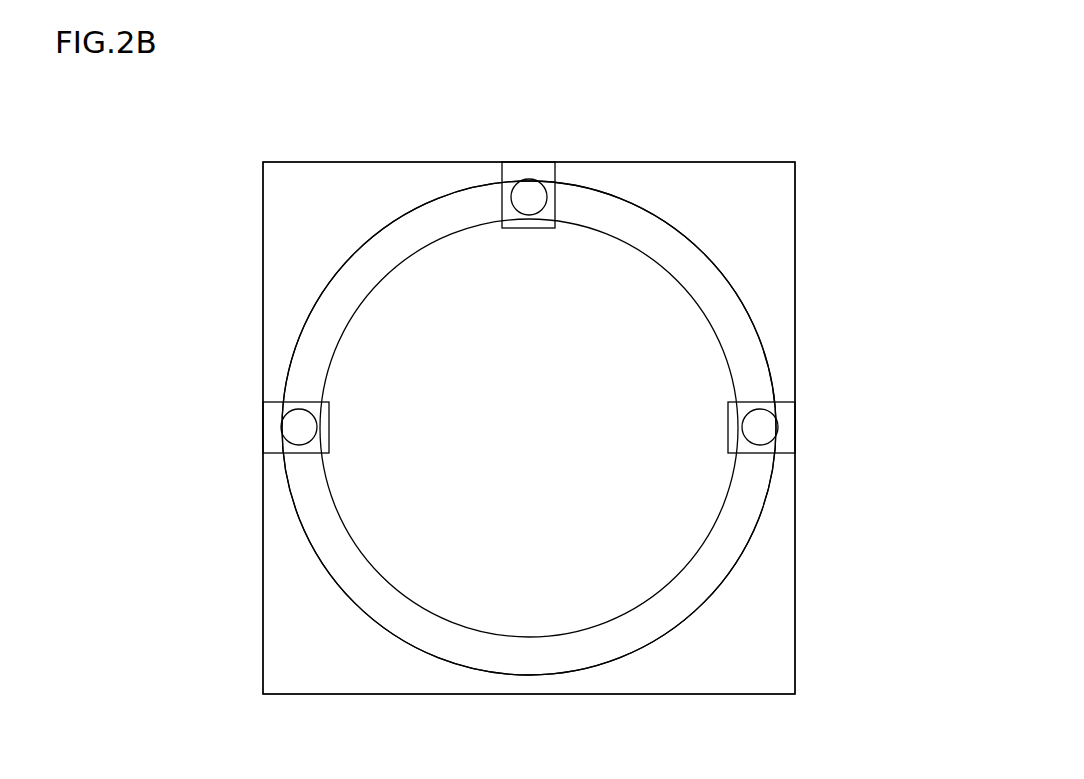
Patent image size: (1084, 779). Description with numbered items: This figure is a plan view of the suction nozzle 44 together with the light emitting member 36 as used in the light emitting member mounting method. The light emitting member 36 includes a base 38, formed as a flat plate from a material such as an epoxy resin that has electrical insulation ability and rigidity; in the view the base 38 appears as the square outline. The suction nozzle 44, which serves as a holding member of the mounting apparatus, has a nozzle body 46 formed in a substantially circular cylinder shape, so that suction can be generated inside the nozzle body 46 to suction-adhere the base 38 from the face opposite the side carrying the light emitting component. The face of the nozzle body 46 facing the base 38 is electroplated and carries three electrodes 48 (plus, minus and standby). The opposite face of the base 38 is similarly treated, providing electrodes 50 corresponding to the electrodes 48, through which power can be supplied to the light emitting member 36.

The light emitting member 36 is at (262, 622).
The base 38 is at (782, 640).
The suction nozzle 44 is at (302, 325).
The nozzle body 46 is at (757, 350).
The electrodes 48 is at (565, 178).
The electrodes 50 is at (503, 178).